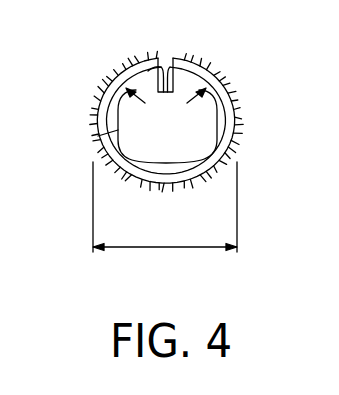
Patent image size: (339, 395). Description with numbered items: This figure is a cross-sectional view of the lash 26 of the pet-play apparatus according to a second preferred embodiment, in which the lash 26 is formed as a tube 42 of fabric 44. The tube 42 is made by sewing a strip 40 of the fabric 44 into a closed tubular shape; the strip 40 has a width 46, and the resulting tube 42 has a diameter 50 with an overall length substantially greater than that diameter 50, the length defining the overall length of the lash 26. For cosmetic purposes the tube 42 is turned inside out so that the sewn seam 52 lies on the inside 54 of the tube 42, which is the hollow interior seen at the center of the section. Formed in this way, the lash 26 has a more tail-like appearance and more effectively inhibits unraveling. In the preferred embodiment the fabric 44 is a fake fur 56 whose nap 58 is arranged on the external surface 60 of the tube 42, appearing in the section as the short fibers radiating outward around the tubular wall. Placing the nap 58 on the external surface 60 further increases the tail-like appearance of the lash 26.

The lash 26 is at (177, 119).
The strip 40 is at (238, 123).
The tube 42 is at (207, 63).
The fabric 44 is at (198, 186).
The width 46 is at (98, 136).
The diameter 50 is at (165, 248).
The sewn seam 52 is at (148, 71).
The inside 54 is at (182, 143).
The fake fur 56 is at (92, 112).
The nap 58 is at (177, 59).
The external surface 60 is at (145, 189).